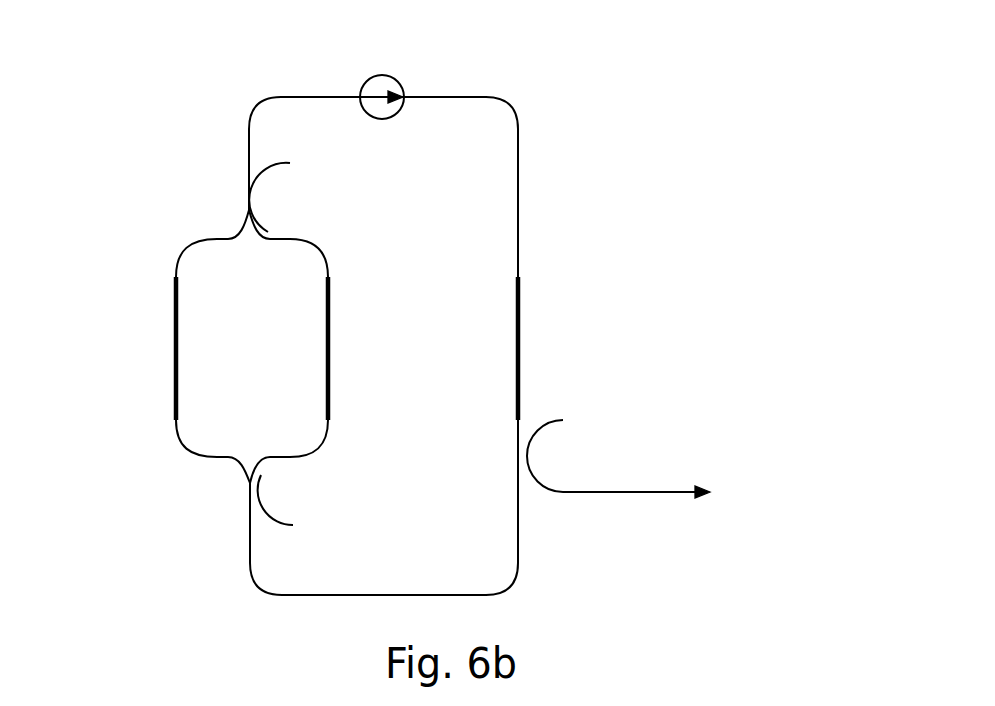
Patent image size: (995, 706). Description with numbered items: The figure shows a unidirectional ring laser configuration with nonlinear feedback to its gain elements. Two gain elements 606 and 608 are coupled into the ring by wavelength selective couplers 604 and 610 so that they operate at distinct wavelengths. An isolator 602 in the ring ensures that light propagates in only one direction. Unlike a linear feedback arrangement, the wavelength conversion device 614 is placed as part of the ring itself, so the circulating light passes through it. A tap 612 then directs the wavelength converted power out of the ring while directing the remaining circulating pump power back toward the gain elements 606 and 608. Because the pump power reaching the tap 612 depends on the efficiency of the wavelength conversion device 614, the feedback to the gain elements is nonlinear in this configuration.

The isolator 602 is at (380, 74).
The wavelength selective coupler 604 is at (216, 196).
The gain element 606 is at (328, 307).
The gain element 608 is at (176, 345).
The wavelength selective coupler 610 is at (220, 498).
The tap 612 is at (550, 521).
The wavelength conversion device 614 is at (518, 354).